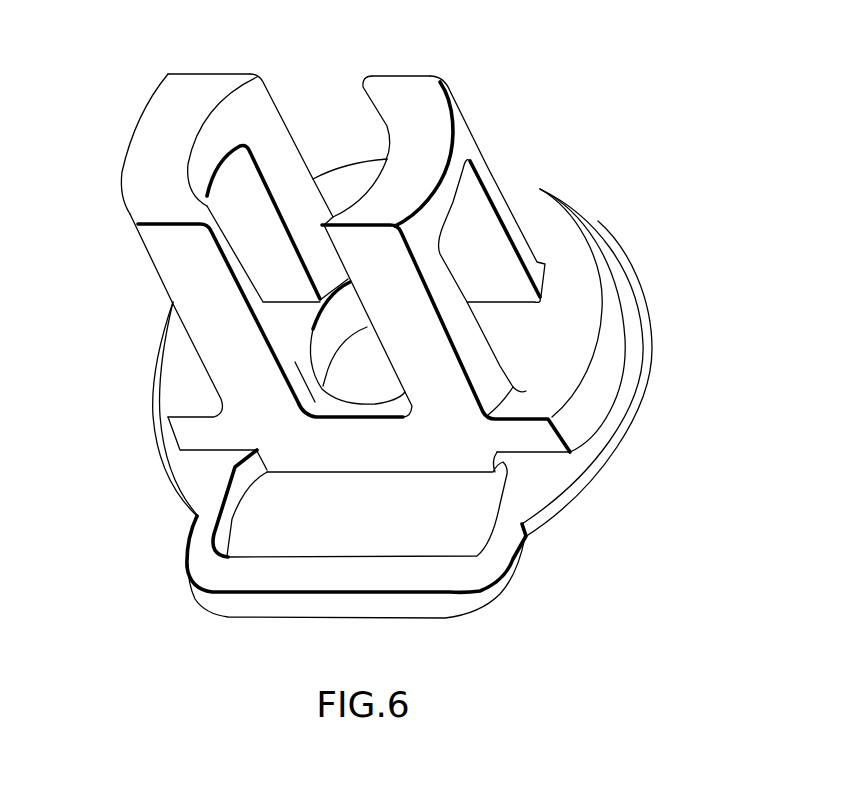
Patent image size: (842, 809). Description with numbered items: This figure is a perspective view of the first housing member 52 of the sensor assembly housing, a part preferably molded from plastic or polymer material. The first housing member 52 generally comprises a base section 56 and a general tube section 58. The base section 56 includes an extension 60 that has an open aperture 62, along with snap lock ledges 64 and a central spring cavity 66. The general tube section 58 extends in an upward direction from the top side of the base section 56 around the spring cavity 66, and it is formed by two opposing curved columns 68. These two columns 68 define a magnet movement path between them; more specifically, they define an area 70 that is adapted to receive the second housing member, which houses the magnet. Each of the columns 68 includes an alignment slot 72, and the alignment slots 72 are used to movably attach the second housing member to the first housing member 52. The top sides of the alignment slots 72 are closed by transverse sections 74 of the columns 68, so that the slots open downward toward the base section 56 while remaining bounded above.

The first housing member 52 is at (565, 103).
The base section 56 is at (610, 320).
The general tube section 58 is at (140, 97).
The extension 60 is at (495, 600).
The open aperture 62 is at (333, 527).
The snap lock ledges 64 is at (625, 375).
The central spring cavity 66 is at (358, 383).
The curved columns 68 is at (210, 75).
The area 70 is at (345, 105).
The alignment slot 72 is at (247, 217).
The transverse sections 74 is at (140, 152).